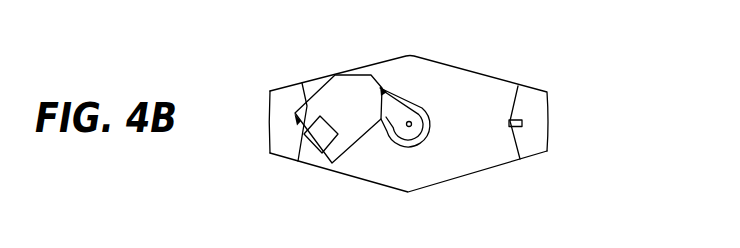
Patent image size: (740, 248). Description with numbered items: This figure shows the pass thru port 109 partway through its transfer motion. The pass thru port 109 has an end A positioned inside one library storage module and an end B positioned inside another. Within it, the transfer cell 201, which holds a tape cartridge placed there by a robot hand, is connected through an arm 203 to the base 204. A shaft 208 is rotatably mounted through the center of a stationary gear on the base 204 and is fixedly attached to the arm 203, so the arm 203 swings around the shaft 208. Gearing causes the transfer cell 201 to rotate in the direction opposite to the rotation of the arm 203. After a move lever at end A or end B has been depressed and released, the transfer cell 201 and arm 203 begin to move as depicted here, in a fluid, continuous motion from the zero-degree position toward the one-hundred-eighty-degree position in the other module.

The pass thru port 109 is at (556, 64).
The transfer cell 201 is at (333, 95).
The arm 203 is at (390, 102).
The base 204 is at (465, 165).
The shaft 208 is at (412, 123).